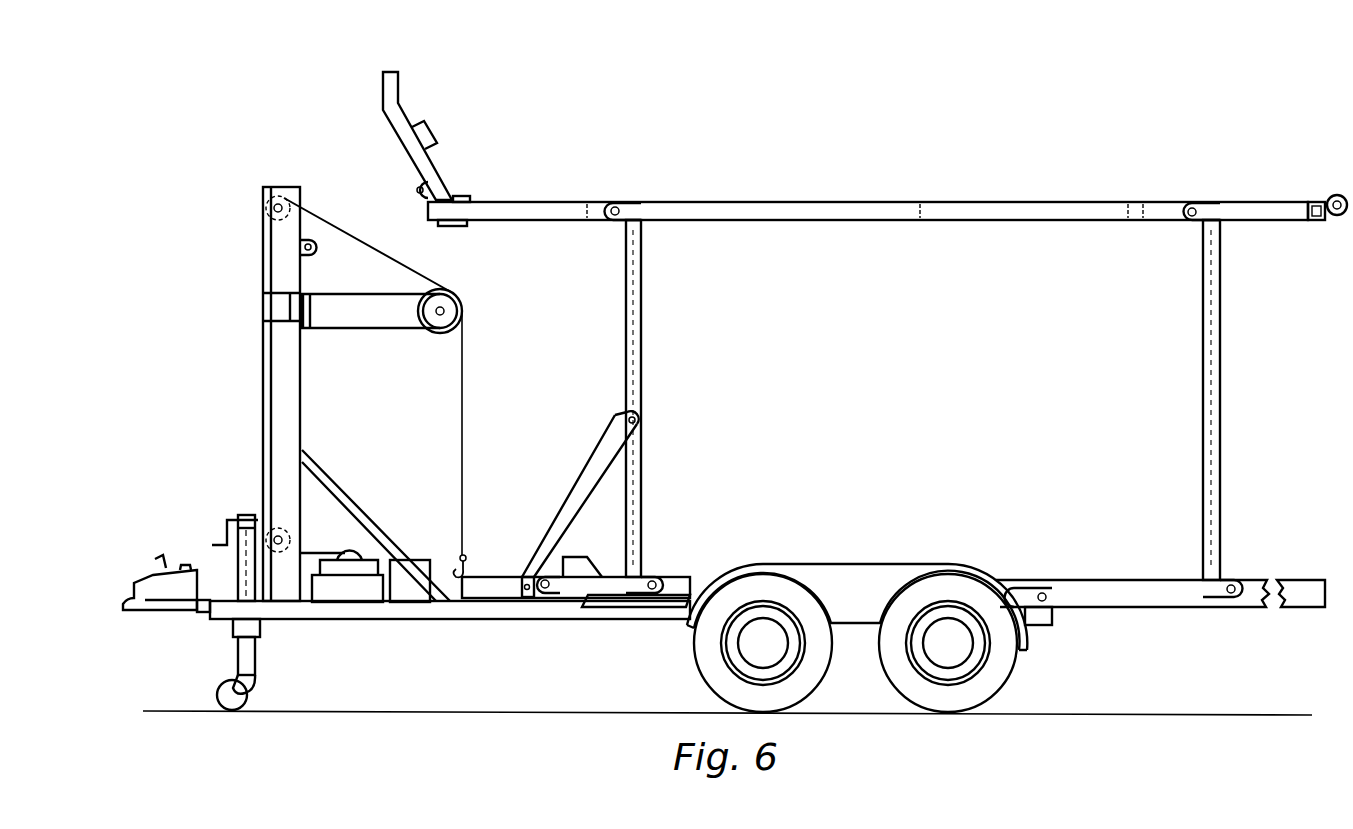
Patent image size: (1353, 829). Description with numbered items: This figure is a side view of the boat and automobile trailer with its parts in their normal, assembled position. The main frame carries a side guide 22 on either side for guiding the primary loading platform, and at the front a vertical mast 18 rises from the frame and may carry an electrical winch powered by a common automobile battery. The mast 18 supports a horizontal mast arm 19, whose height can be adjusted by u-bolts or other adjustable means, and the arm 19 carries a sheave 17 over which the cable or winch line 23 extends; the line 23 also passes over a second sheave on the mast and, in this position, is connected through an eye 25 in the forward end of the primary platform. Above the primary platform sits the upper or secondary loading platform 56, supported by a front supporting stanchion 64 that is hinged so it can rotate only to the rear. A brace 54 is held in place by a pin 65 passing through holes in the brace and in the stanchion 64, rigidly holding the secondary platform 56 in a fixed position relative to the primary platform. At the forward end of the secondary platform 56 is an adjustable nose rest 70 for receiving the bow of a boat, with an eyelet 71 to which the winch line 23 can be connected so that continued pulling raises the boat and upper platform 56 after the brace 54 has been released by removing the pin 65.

The sheave 17 is at (461, 302).
The mast 18 is at (264, 383).
The horizontal mast arm 19 is at (367, 329).
The side guide 22 is at (638, 598).
The winch line 23 is at (464, 355).
The eye 25 is at (470, 573).
The brace 54 is at (582, 470).
The secondary loading platform 56 is at (766, 202).
The front supporting stanchion 64 is at (641, 306).
The pin 65 is at (640, 418).
The adjustable nose rest 70 is at (390, 122).
The eyelet 71 is at (413, 186).